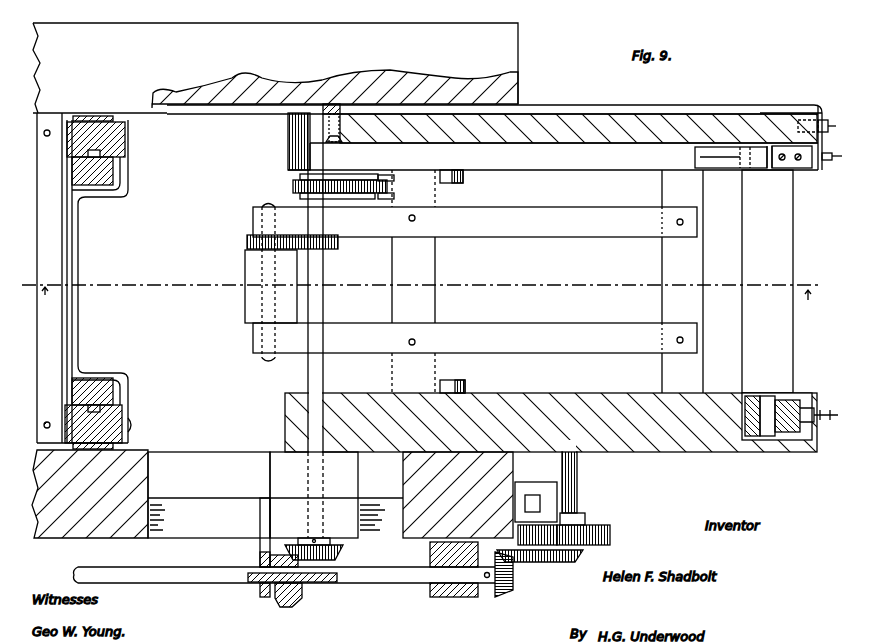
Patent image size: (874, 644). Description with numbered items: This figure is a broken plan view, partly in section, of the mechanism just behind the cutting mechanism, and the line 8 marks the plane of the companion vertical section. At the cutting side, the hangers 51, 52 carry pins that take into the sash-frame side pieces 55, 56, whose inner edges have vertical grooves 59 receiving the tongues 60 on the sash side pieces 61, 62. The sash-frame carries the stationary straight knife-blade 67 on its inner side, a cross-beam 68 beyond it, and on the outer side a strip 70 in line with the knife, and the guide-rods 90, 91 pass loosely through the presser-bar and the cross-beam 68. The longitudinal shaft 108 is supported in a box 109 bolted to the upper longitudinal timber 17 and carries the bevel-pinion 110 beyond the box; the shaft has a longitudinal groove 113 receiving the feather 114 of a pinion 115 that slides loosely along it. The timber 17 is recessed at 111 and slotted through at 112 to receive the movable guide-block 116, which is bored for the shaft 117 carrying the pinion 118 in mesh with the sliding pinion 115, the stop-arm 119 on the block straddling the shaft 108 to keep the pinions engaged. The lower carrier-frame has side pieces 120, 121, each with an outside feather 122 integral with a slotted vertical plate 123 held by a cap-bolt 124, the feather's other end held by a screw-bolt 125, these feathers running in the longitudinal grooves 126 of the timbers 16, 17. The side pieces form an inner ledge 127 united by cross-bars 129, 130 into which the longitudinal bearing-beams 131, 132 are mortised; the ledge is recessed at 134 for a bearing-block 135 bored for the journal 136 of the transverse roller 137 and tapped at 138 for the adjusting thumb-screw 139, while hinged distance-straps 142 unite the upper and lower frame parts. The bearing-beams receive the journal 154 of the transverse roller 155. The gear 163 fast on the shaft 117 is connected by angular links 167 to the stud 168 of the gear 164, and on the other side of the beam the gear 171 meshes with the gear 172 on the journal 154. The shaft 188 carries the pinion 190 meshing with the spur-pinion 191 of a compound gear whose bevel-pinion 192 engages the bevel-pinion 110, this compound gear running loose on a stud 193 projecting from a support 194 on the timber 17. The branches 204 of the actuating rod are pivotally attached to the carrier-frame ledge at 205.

The section line 8 is at (421, 289).
The upper longitudinal timber 16 is at (275, 68).
The upper longitudinal timber 17 is at (82, 515).
The hanger 51 is at (102, 117).
The hanger 52 is at (80, 486).
The sash-frame side piece 55 is at (112, 136).
The sash-frame side piece 56 is at (112, 412).
The vertical groove 59 is at (130, 428).
The vertical tongue 60 is at (100, 153).
The sash side piece 61 is at (105, 176).
The sash side piece 62 is at (95, 378).
The stationary straight knife-blade 67 is at (72, 228).
The cross-beam 68 is at (48, 335).
The strip 70 is at (79, 260).
The guide-rod 90 is at (48, 128).
The guide-rod 91 is at (47, 420).
The longitudinal shaft 108 is at (398, 584).
The box 109 is at (458, 586).
The pinion 110 is at (512, 584).
The recess 111 is at (232, 525).
The slot 112 is at (209, 495).
The longitudinal groove 113 is at (312, 590).
The feather 114 is at (272, 598).
The pinion 115 is at (284, 606).
The guide-block 116 is at (314, 495).
The shaft 117 is at (308, 376).
The pinion 118 is at (344, 551).
The stop-arm 119 is at (258, 548).
The side piece 120 is at (648, 118).
The side piece 121 is at (551, 422).
The feather 122 is at (570, 110).
The vertical plate 123 is at (822, 114).
The cap-bolt 124 is at (830, 132).
The screw-bolt 125 is at (348, 110).
The longitudinal groove 126 is at (254, 108).
The inner ledge 127 is at (553, 156).
The cross-bar 129 is at (413, 281).
The cross-bar 130 is at (660, 270).
The longitudinal bearing-beam 131 is at (475, 222).
The longitudinal bearing-beam 132 is at (524, 330).
The recess 134 is at (812, 400).
The bearing-block 135 is at (790, 400).
The journal 136 is at (762, 395).
The transverse roller 137 is at (767, 281).
The tapped bore 138 is at (774, 437).
The adjusting thumb-screw 139 is at (830, 162).
The hinged distance-strap 142 is at (698, 156).
The journal 154 is at (266, 362).
The transverse roller 155 is at (271, 286).
The gear 163 is at (292, 186).
The gear 164 is at (390, 188).
The angular link 167 is at (332, 180).
The stud 168 is at (384, 155).
The gear 171 is at (330, 250).
The gear 172 is at (246, 242).
The shaft 188 is at (578, 470).
The pinion 190 is at (606, 528).
The spur-pinion 191 is at (515, 529).
The bevel-pinion 192 is at (540, 560).
The stud 193 is at (532, 484).
The support 194 is at (512, 478).
The branch 204 is at (460, 184).
The pivotal attachment 205 is at (456, 172).